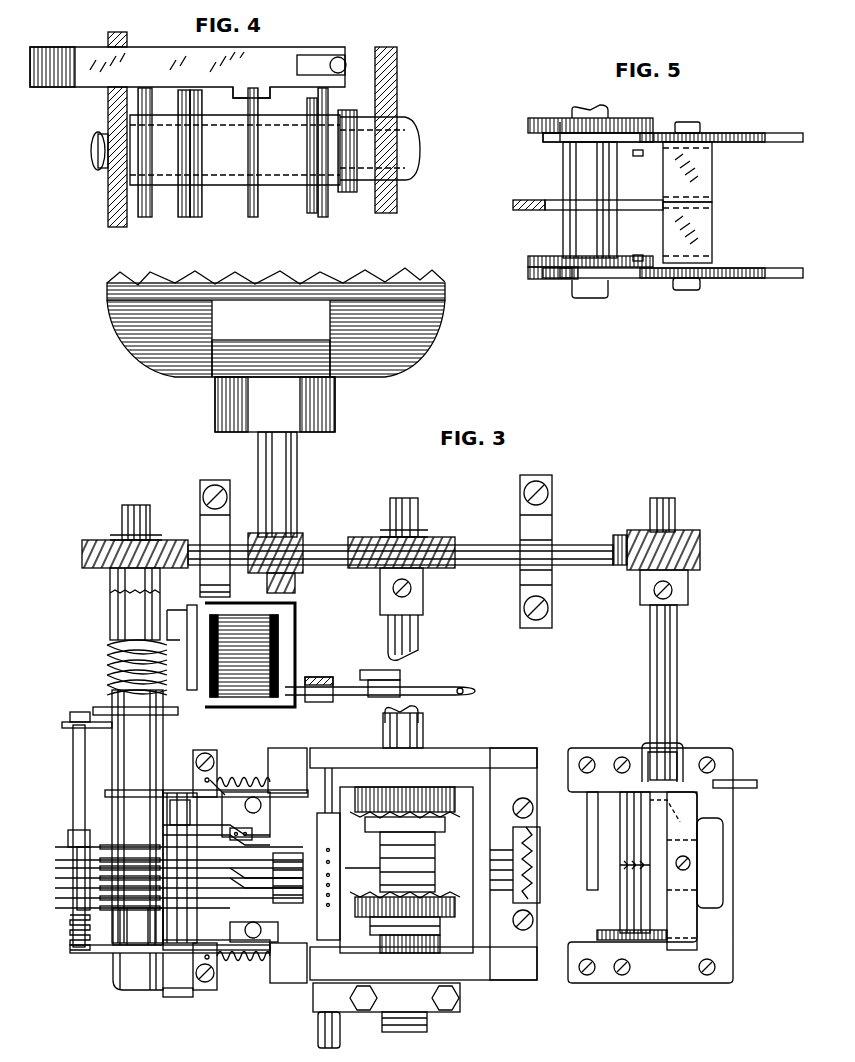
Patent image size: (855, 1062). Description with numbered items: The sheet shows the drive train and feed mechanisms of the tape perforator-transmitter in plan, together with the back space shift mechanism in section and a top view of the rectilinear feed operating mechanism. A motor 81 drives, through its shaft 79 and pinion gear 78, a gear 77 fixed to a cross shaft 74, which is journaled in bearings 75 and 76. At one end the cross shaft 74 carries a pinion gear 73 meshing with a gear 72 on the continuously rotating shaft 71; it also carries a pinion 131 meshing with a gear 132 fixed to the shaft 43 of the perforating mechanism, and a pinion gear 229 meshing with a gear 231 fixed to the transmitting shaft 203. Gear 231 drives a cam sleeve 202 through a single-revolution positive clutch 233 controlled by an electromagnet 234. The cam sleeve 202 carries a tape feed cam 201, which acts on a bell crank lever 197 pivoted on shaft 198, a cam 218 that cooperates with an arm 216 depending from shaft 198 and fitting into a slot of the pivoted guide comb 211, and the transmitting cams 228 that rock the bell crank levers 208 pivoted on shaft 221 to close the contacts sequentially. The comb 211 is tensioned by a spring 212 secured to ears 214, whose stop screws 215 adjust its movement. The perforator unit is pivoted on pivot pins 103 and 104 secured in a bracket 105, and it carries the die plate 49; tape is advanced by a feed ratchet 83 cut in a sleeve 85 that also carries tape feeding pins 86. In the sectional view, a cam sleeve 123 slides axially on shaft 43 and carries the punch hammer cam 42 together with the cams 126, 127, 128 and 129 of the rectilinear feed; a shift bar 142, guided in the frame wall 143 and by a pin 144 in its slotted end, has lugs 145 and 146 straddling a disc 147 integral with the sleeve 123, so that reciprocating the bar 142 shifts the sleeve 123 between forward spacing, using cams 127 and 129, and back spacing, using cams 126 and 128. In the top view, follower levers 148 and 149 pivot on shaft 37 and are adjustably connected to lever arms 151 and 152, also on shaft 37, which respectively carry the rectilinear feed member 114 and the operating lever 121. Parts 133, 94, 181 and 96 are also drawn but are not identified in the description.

In FIG. 4, the shift bar 142 is at (212, 64).
In FIG. 4, the wall of the frame 143 is at (108, 36).
In FIG. 4, the pin 144 is at (340, 60).
In FIG. 4, the lug 145 is at (236, 92).
In FIG. 4, the lug 146 is at (264, 92).
In FIG. 4, the shaft 43 is at (97, 172).
In FIG. 5, the shaft 43 is at (600, 110).
In FIG. 3, the shaft 43 is at (420, 643).
In FIG. 4, the cam 42 is at (145, 218).
In FIG. 3, the cam 42 is at (342, 1030).
In FIG. 4, the cam sleeve 123 is at (216, 186).
In FIG. 5, the cam sleeve 123 is at (575, 168).
In FIG. 3, the cam sleeve 123 is at (425, 735).
In FIG. 4, the cam 126 is at (184, 218).
In FIG. 5, the cam 126 is at (530, 275).
In FIG. 4, the cam 127 is at (198, 218).
In FIG. 5, the cam 127 is at (530, 260).
In FIG. 4, the disc 147 is at (259, 205).
In FIG. 4, the cam 128 is at (311, 218).
In FIG. 5, the cam 128 is at (546, 138).
In FIG. 4, the cam 129 is at (326, 218).
In FIG. 5, the cam 129 is at (528, 126).
In FIG. 5, the follower lever 149 is at (560, 122).
In FIG. 5, the shaft 37 is at (696, 124).
In FIG. 5, the lever arm 152 is at (713, 170).
In FIG. 5, the lever arm 151 is at (713, 236).
In FIG. 5, the operating lever 121 is at (515, 203).
In FIG. 5, the rectilinear feed member 114 is at (515, 210).
In FIG. 5, the follower lever 148 is at (563, 279).
In FIG. 3, the motor 81 is at (398, 362).
In FIG. 3, the motor shaft 79 is at (287, 470).
In FIG. 3, the pinion gear 78 is at (296, 540).
In FIG. 3, the gear 77 is at (296, 586).
In FIG. 3, the bearing 76 is at (205, 520).
In FIG. 3, the pinion gear 229 is at (117, 530).
In FIG. 3, the gear 231 is at (95, 555).
In FIG. 3, the positive clutch 233 is at (102, 602).
In FIG. 3, the electromagnet 234 is at (256, 656).
In FIG. 3, the pinion 131 is at (420, 534).
In FIG. 3, the gear 132 is at (462, 543).
In FIG. 3, the bearing 75 is at (546, 532).
In FIG. 3, the cross shaft 74 is at (576, 546).
In FIG. 3, the pinion gear 73 is at (680, 526).
In FIG. 3, the gear 72 is at (702, 549).
In FIG. 3, the shaft 71 is at (678, 632).
In FIG. 3, the lever 133 is at (464, 680).
In FIG. 3, the bracket 105 is at (342, 744).
In FIG. 3, the pivot pin 104 is at (350, 790).
In FIG. 3, the clip 94 is at (655, 760).
In FIG. 3, the shaft 221 is at (78, 752).
In FIG. 3, the tape feed cam 201 is at (105, 793).
In FIG. 3, the cam sleeve 202 is at (112, 822).
In FIG. 3, the bell crank lever 197 is at (165, 808).
In FIG. 3, the guide comb 211 is at (172, 840).
In FIG. 3, the transmitting cam 228 is at (75, 850).
In FIG. 3, the cam 218 is at (80, 878).
In FIG. 3, the bell crank lever 208 is at (80, 900).
In FIG. 3, the stop screws 215 is at (205, 753).
In FIG. 3, the ears 214 is at (212, 778).
In FIG. 3, the spring 212 is at (246, 773).
In FIG. 3, the block 181 is at (265, 798).
In FIG. 3, the arm 216 is at (192, 888).
In FIG. 3, the transmitting shaft 203 is at (125, 930).
In FIG. 3, the pivot shaft 198 is at (153, 982).
In FIG. 3, the die plate 49 is at (288, 960).
In FIG. 3, the pivot pin 103 is at (332, 985).
In FIG. 3, the feed ratchet 83 is at (626, 801).
In FIG. 3, the tape feeding pins 86 is at (622, 865).
In FIG. 3, the plate 96 is at (590, 863).
In FIG. 3, the sleeve 85 is at (625, 905).